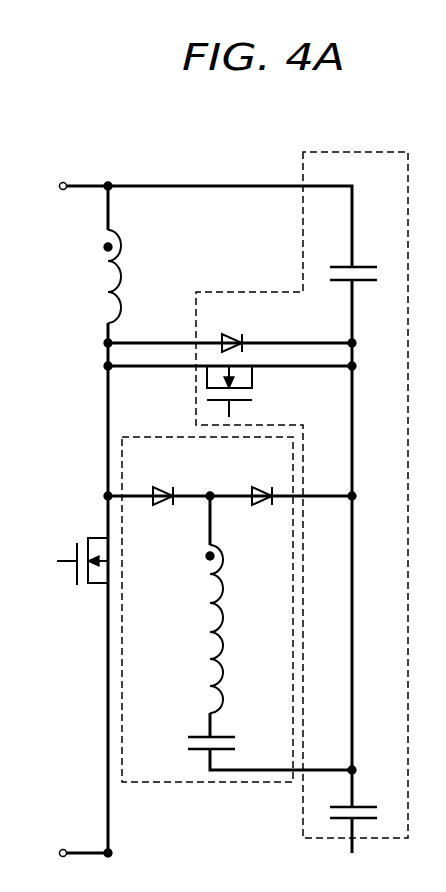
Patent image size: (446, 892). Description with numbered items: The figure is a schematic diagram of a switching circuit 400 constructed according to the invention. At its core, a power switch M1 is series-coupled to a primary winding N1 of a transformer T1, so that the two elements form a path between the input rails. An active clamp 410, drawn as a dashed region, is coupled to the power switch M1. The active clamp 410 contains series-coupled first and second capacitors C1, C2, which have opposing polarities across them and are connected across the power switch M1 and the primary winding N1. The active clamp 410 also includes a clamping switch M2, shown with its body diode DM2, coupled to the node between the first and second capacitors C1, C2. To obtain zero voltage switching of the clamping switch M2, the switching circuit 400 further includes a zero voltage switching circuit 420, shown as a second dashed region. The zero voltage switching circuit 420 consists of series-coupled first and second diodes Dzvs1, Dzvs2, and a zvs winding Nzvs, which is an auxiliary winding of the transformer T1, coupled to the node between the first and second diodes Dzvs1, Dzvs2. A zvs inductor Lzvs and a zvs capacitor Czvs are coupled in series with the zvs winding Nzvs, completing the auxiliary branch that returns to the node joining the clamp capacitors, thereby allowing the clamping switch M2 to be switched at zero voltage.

The switching circuit 400 is at (160, 148).
The active clamp 410 is at (366, 150).
The zero voltage switching circuit 420 is at (158, 437).
The transformer T1 is at (111, 260).
The primary winding N1 is at (102, 276).
The second capacitor C2 is at (360, 257).
The body diode DM2 is at (228, 327).
The clamping switch M2 is at (244, 391).
The first diode Dzvs1 is at (166, 481).
The second diode Dzvs2 is at (260, 481).
The power switch M1 is at (75, 553).
The zvs winding Nzvs is at (191, 588).
The zvs inductor Lzvs is at (192, 672).
The zvs capacitor Czvs is at (197, 729).
The first capacitor C1 is at (361, 796).